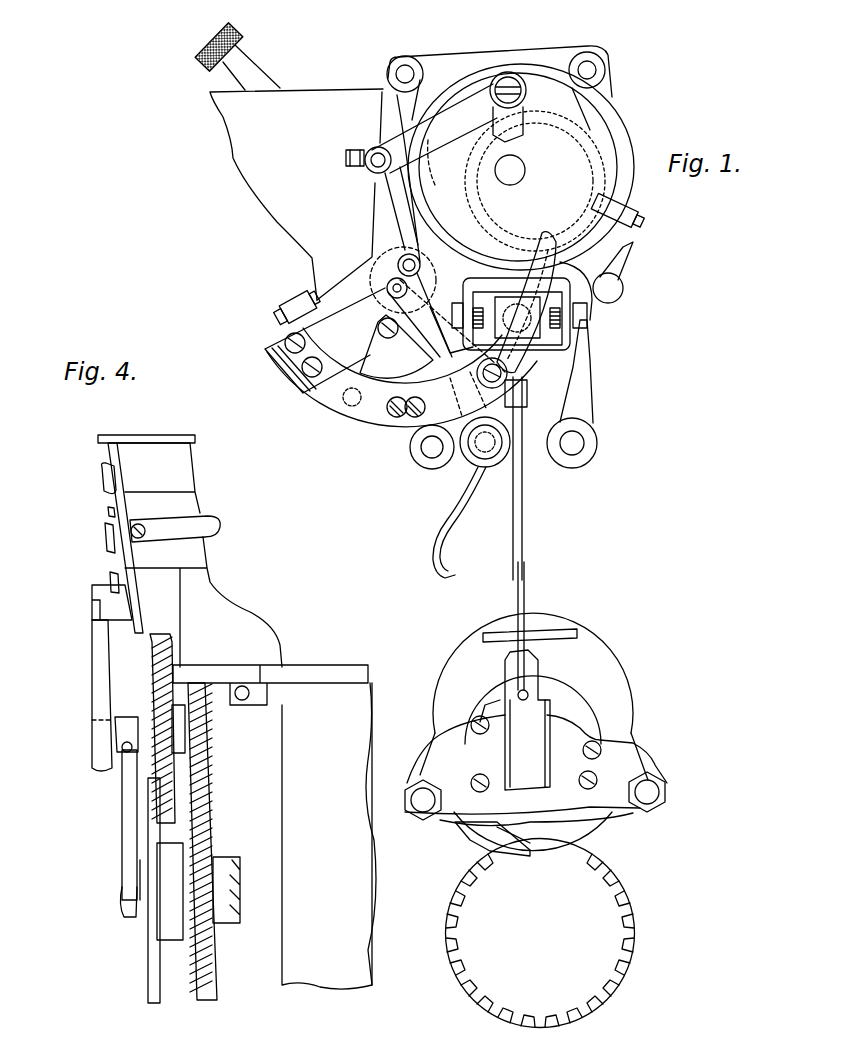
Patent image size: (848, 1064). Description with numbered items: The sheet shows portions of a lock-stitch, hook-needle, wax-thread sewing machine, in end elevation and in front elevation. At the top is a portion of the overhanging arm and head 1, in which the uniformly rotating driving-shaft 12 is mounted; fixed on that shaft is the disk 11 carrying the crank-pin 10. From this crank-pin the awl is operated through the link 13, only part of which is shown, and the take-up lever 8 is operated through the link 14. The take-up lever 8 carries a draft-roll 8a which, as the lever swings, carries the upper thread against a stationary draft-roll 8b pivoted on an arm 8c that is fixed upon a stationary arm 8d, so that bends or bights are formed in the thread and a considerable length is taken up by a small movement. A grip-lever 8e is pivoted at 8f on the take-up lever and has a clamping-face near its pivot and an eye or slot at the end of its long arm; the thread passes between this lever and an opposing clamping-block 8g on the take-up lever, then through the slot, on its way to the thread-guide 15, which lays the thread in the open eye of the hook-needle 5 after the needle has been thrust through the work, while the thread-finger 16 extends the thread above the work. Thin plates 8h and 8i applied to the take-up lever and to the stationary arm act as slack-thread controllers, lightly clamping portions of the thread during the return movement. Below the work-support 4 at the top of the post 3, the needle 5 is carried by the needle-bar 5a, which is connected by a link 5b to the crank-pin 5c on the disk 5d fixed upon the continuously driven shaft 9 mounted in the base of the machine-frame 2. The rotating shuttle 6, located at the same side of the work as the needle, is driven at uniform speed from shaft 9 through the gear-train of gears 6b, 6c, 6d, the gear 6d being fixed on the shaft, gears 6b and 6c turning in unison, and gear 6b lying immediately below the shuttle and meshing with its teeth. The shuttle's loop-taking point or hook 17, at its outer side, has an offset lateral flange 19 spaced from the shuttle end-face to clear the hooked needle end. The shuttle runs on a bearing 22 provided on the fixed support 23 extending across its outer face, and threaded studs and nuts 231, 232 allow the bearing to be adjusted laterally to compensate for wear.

In FIG. 1, the overhanging arm and head 1 is at (518, 48).
In FIG. 4, the base of the machine-frame 2 is at (374, 960).
In FIG. 4, the post 3 is at (196, 472).
In FIG. 1, the work-support 4 is at (578, 632).
In FIG. 4, the work-support 4 is at (150, 432).
In FIG. 1, the hook-needle 5 is at (526, 606).
In FIG. 4, the hook-needle 5 is at (108, 510).
In FIG. 1, the needle-bar 5a is at (504, 746).
In FIG. 4, the needle-bar 5a is at (92, 660).
In FIG. 4, the link 5b is at (122, 812).
In FIG. 4, the crank-pin 5c is at (120, 902).
In FIG. 4, the disk 5d is at (148, 982).
In FIG. 1, the rotating shuttle 6 is at (612, 688).
In FIG. 1, the gear 6b is at (640, 928).
In FIG. 4, the gear 6b is at (150, 664).
In FIG. 4, the gear 6c is at (212, 758).
In FIG. 4, the gear 6d is at (215, 1000).
In FIG. 1, the take-up lever 8 is at (372, 222).
In FIG. 1, the draft-roll 8a is at (490, 470).
In FIG. 1, the stationary draft-roll 8b is at (512, 386).
In FIG. 1, the arm 8c is at (372, 426).
In FIG. 1, the stationary arm 8d is at (320, 288).
In FIG. 1, the grip-lever 8e is at (424, 326).
In FIG. 1, the pivot 8f is at (388, 296).
In FIG. 1, the clamping-block 8g is at (420, 264).
In FIG. 1, the slack-thread controller plate 8h is at (378, 378).
In FIG. 1, the slack-thread controller plate 8i is at (522, 272).
In FIG. 4, the shaft 9 is at (230, 924).
In FIG. 1, the crank-pin 10 is at (522, 104).
In FIG. 1, the disk 11 is at (597, 110).
In FIG. 1, the driving-shaft 12 is at (526, 170).
In FIG. 1, the link 13 is at (482, 122).
In FIG. 1, the link 14 is at (436, 160).
In FIG. 1, the thread-guide 15 is at (524, 562).
In FIG. 1, the thread-finger 16 is at (450, 572).
In FIG. 1, the loop-taking point or hook 17 is at (458, 826).
In FIG. 1, the flange 19 is at (496, 832).
In FIG. 4, the flange 19 is at (100, 482).
In FIG. 1, the bearing 22 is at (490, 712).
In FIG. 1, the fixed support 23 is at (652, 758).
In FIG. 4, the fixed support 23 is at (108, 566).
In FIG. 1, the threaded studs and nuts 231 is at (420, 800).
In FIG. 1, the threaded studs and nuts 232 is at (422, 816).